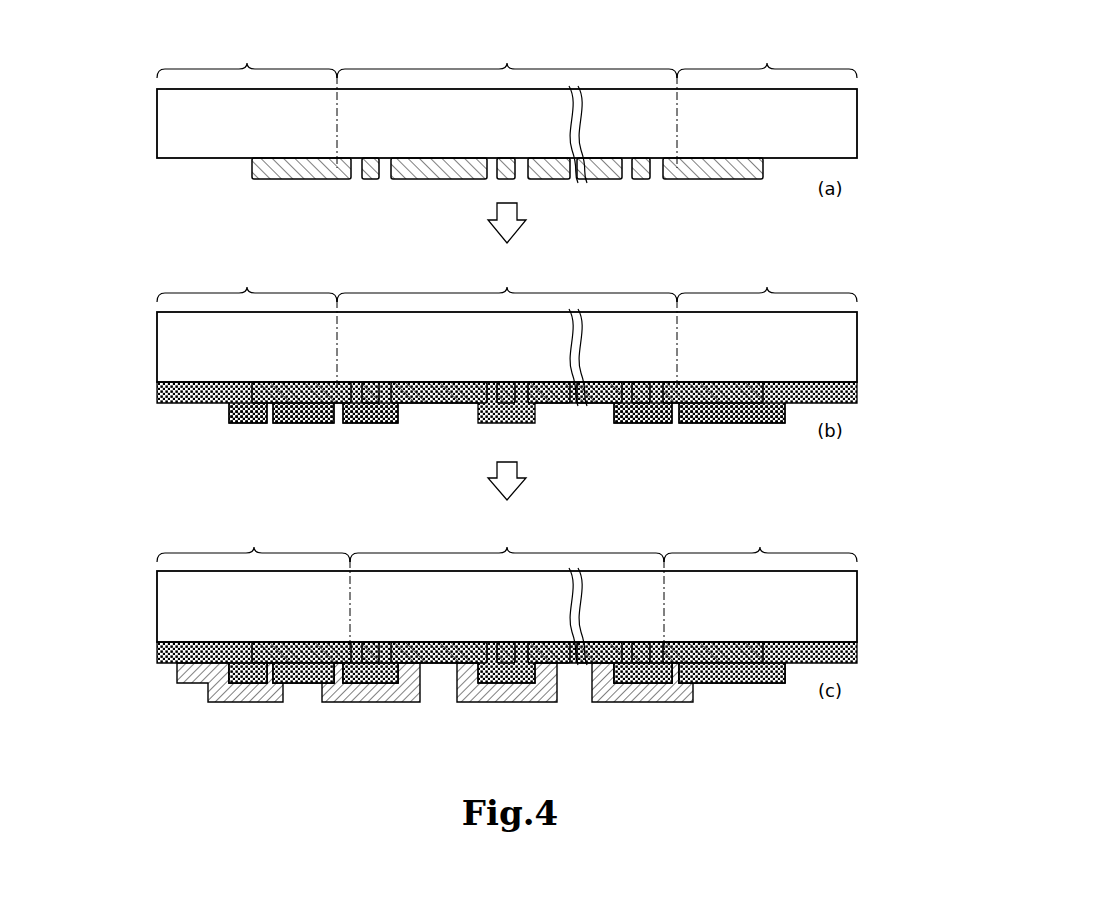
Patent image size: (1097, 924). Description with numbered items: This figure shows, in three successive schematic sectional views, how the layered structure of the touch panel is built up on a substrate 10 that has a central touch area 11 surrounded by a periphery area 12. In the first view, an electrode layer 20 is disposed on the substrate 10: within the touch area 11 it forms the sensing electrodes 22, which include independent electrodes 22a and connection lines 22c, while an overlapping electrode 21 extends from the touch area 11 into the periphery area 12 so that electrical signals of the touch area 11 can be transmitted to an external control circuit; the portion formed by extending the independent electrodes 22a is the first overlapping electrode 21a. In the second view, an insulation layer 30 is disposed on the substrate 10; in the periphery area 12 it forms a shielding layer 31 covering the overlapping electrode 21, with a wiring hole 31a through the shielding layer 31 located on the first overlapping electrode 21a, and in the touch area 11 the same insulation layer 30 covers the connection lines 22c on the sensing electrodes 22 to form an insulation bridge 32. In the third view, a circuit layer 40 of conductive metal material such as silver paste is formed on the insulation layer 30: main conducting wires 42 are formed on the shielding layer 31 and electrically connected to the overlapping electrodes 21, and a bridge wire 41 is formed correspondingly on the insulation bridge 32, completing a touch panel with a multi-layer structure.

The substrate 10 is at (172, 118).
The touch area 11 is at (507, 299).
The periphery area 12 is at (507, 344).
The electrode layer 20 is at (604, 186).
The overlapping electrode 21 is at (300, 185).
The first overlapping electrode 21a is at (250, 172).
The sensing electrodes 22 is at (450, 221).
The independent electrode 22a is at (440, 182).
The connection line 22c is at (366, 182).
The insulation layer 30 is at (606, 419).
The shielding layer 31 is at (770, 424).
The wiring hole 31a is at (273, 419).
The insulation bridge 32 is at (634, 424).
The circuit layer 40 is at (557, 704).
The bridge wire 41 is at (523, 703).
The main conducting wire 42 is at (226, 703).